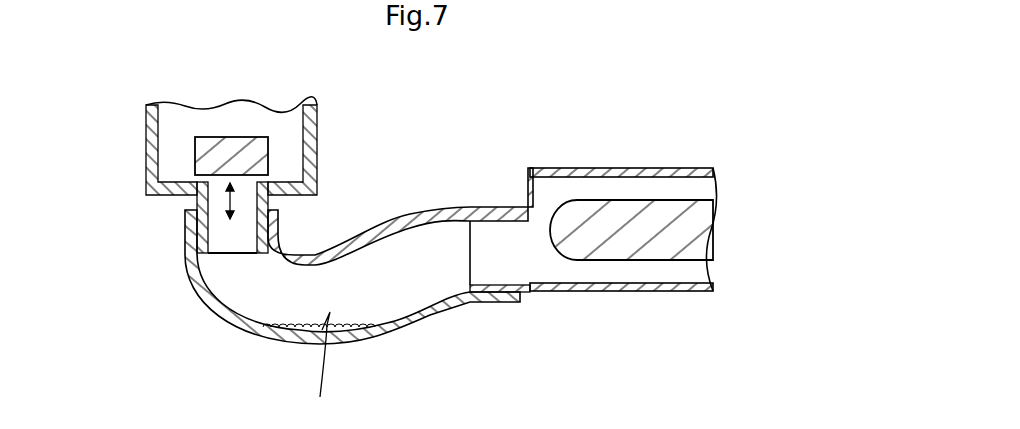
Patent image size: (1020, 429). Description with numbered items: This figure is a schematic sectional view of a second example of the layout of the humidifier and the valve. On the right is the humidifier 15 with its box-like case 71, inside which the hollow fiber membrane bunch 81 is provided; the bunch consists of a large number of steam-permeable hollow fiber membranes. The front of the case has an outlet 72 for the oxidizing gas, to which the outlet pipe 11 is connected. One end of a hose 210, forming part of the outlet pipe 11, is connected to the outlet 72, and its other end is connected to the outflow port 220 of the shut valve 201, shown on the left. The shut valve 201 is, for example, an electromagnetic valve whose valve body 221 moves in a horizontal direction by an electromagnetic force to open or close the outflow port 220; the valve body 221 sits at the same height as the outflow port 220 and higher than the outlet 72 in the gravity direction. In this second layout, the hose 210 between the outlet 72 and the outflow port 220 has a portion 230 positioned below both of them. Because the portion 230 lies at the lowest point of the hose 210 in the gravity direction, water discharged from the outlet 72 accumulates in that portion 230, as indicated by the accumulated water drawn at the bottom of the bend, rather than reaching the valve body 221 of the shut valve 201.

The shut valve 201 is at (142, 173).
The valve body 221 is at (260, 160).
The outflow port 220 is at (243, 233).
The portion 230 is at (270, 333).
The hose 210 is at (366, 229).
The outlet 72 is at (492, 240).
The outlet pipe 11 is at (397, 150).
The case 71 is at (603, 168).
The humidifier 15 is at (623, 199).
The hollow fiber membrane bunch 81 is at (623, 252).